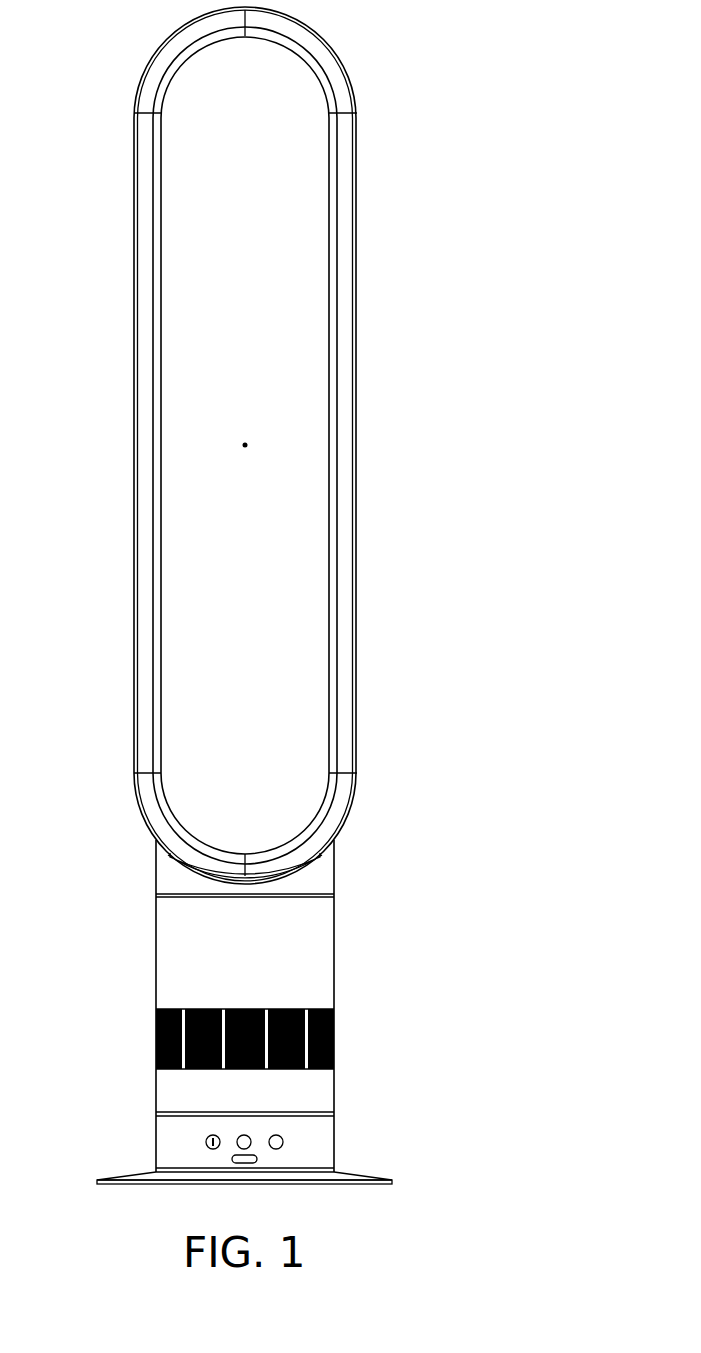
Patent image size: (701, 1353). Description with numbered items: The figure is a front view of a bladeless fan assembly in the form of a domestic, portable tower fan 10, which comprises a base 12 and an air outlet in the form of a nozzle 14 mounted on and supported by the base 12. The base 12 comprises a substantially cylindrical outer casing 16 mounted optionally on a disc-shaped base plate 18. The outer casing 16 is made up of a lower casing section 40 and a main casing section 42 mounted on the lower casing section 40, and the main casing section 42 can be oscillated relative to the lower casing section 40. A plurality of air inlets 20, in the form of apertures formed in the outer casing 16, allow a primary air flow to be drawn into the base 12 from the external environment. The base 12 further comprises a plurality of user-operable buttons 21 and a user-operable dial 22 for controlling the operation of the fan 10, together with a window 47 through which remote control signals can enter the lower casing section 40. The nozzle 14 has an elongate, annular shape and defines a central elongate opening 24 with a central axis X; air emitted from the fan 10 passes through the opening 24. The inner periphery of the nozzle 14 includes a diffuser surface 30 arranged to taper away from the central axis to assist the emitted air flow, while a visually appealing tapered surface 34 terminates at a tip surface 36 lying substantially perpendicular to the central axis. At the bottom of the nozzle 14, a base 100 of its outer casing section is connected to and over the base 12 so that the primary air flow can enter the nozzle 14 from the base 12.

The tower fan 10 is at (96, 360).
The base 12 is at (388, 985).
The nozzle 14 is at (390, 530).
The outer casing 16 is at (155, 952).
The base plate 18 is at (370, 1176).
The air inlets 20 is at (335, 1036).
The user-operable buttons 21 is at (206, 1142).
The user-operable dial 22 is at (250, 1148).
The central elongate opening 24 is at (311, 663).
The diffuser surface 30 is at (330, 248).
The tapered surface 34 is at (345, 180).
The tip surface 36 is at (357, 322).
The lower casing section 40 is at (163, 1128).
The main casing section 42 is at (335, 938).
The window 47 is at (230, 1157).
The base of outer casing section 100 is at (330, 872).